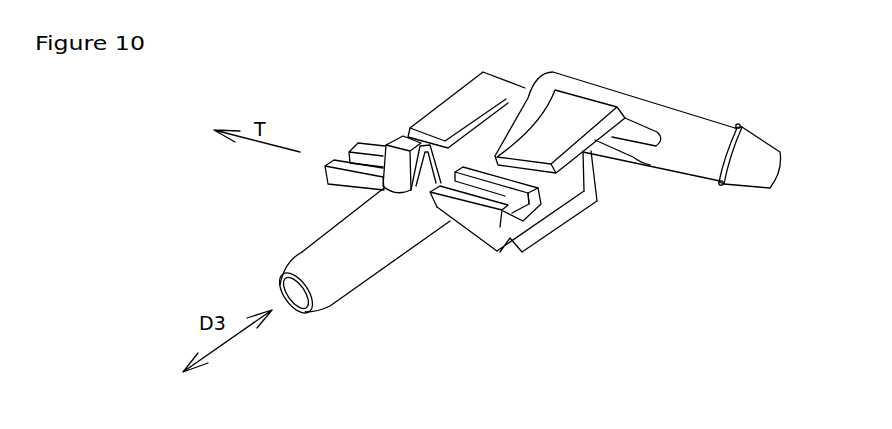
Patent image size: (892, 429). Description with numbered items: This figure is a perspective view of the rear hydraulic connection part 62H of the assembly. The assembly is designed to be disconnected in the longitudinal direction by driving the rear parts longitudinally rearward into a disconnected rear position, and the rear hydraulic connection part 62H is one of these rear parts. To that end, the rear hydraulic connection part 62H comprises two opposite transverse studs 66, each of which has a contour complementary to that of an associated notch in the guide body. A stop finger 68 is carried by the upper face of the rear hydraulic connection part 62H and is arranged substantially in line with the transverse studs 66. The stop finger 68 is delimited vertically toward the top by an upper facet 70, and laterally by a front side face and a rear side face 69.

The rear hydraulic connection part 62H is at (485, 268).
The transverse studs 66 is at (330, 180).
The stop finger 68 is at (398, 175).
The rear side face 69 is at (428, 162).
The upper facet 70 is at (402, 140).